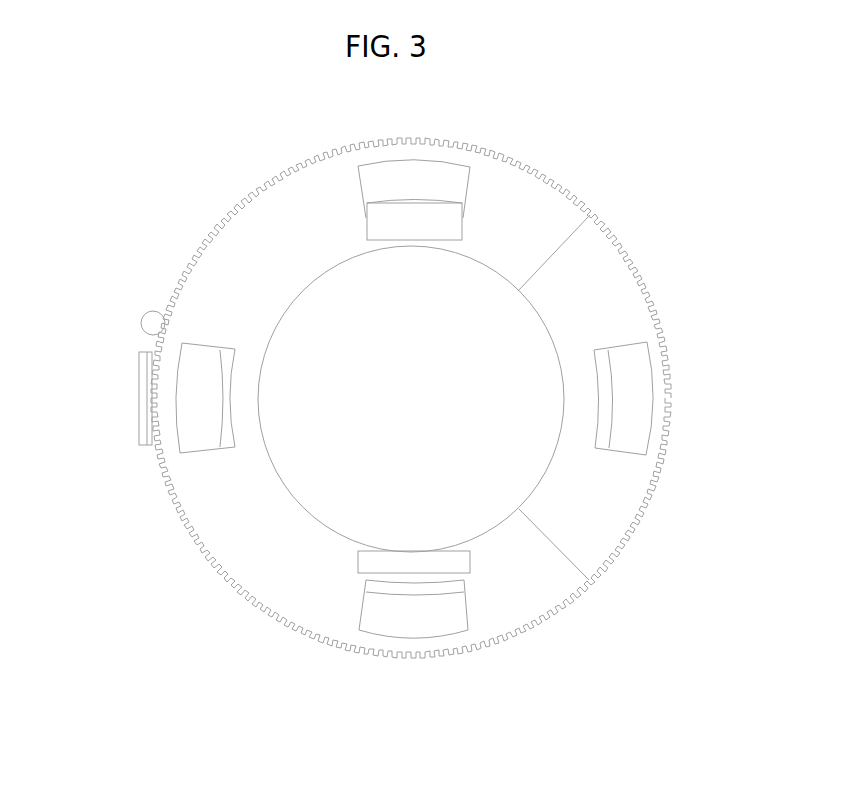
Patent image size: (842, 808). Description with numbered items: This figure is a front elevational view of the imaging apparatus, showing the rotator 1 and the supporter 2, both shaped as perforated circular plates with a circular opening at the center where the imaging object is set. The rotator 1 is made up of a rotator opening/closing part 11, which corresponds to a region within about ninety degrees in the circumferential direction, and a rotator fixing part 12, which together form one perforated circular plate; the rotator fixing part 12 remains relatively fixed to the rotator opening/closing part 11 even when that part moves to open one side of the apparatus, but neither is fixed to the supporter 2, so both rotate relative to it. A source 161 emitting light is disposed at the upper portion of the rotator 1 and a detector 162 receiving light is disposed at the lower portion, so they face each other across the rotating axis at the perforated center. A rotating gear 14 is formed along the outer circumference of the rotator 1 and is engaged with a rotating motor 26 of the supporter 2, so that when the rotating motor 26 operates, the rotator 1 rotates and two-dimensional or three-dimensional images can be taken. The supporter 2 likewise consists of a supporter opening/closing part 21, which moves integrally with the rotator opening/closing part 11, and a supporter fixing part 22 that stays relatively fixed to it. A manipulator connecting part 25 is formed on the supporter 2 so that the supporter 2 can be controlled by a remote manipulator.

The rotator 1 is at (401, 418).
The rotator opening/closing part 11 is at (595, 548).
The rotator fixing part 12 is at (529, 603).
The rotating gear 14 is at (185, 273).
The source 161 is at (383, 217).
The detector 162 is at (420, 562).
The supporter 2 is at (672, 398).
The supporter opening/closing part 21 is at (603, 428).
The supporter fixing part 22 is at (447, 587).
The manipulator connecting part 25 is at (139, 397).
The rotating motor 26 is at (150, 311).